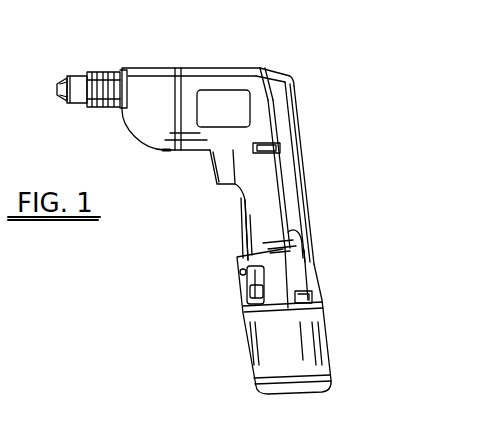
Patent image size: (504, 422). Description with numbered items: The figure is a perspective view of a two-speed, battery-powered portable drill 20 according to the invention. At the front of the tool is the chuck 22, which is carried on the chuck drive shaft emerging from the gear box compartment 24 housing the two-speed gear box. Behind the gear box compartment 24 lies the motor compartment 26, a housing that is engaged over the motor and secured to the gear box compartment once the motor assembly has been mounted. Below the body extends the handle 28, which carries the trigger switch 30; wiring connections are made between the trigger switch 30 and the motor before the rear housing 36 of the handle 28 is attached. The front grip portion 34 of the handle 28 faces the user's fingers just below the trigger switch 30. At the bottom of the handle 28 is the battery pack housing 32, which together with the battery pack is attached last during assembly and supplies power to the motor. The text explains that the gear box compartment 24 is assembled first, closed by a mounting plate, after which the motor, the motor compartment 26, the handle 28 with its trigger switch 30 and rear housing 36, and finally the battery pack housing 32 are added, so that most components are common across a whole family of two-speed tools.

The cordless power tool (drill) 20 is at (374, 173).
The chuck 22 is at (100, 72).
The gear box compartment 24 is at (159, 62).
The motor compartment 26 is at (241, 60).
The handle 28 is at (312, 162).
The trigger switch 30 is at (223, 170).
The battery pack housing 32 is at (331, 353).
The handle grip portion 34 is at (263, 212).
The rear housing 36 is at (289, 231).